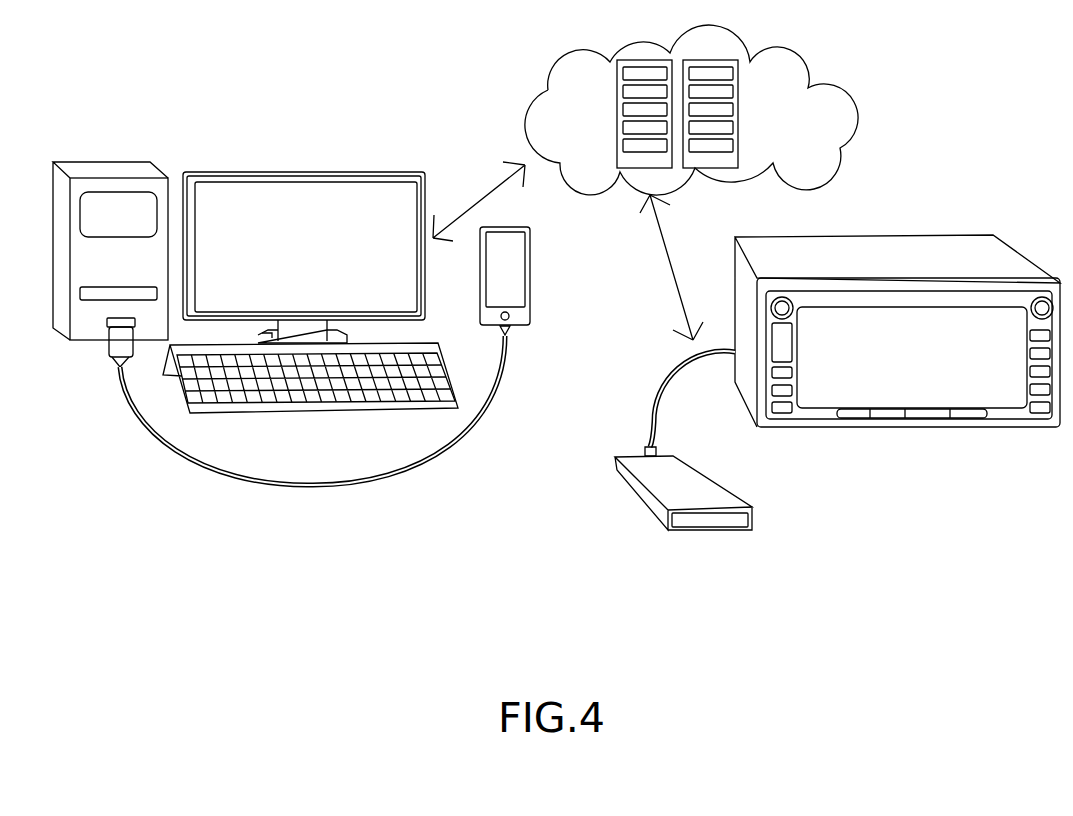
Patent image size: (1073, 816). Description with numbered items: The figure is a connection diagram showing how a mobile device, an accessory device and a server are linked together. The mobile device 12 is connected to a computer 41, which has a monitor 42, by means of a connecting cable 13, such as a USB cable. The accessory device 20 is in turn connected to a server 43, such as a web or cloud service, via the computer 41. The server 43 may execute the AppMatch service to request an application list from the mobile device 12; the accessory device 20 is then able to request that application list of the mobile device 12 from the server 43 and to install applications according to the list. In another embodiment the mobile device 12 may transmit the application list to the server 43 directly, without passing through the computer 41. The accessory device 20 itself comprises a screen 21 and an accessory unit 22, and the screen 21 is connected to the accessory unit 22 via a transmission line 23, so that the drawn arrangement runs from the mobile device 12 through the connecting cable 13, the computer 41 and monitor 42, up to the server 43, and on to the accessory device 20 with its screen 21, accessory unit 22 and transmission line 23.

The mobile device 12 is at (517, 273).
The connecting cable 13 is at (313, 487).
The accessory device 20 is at (897, 323).
The screen 21 is at (917, 400).
The accessory unit 22 is at (731, 503).
The transmission line 23 is at (655, 407).
The computer 41 is at (112, 170).
The monitor 42 is at (347, 190).
The server 43 is at (612, 60).